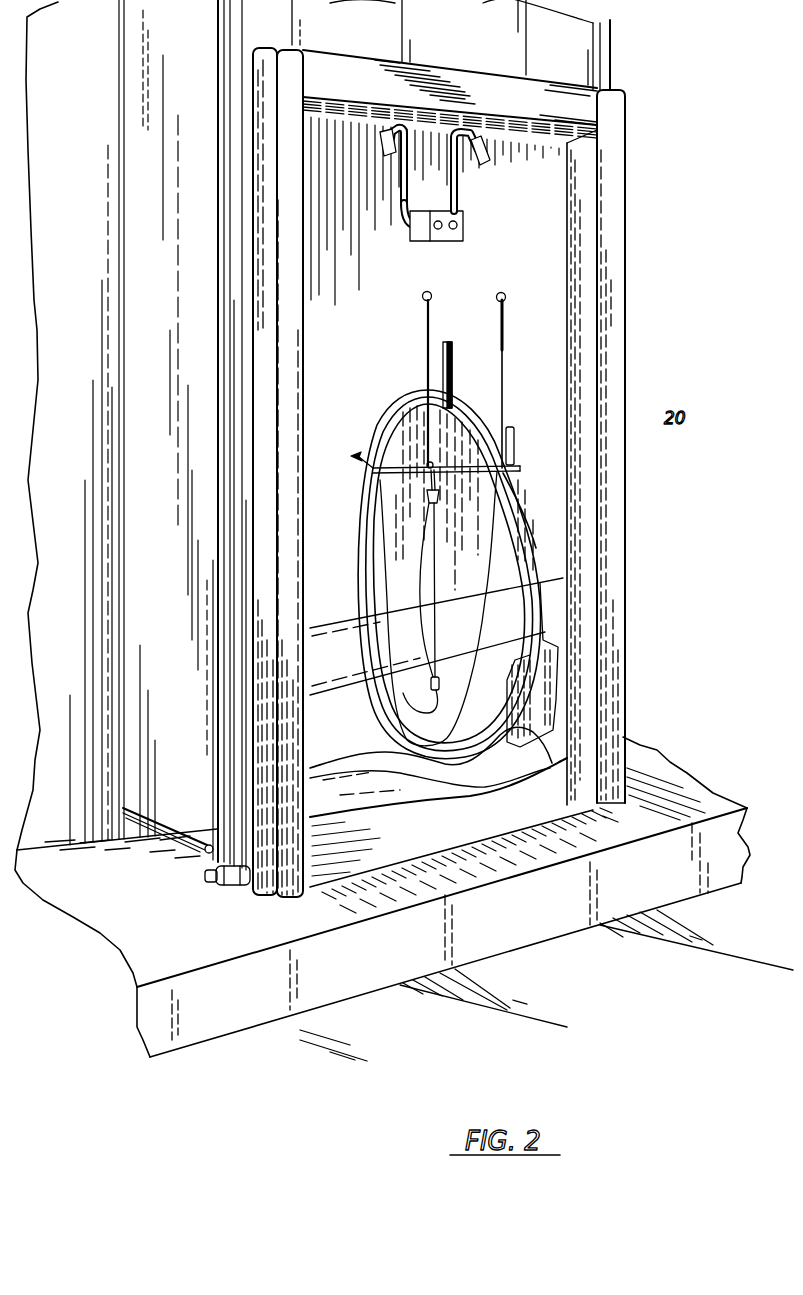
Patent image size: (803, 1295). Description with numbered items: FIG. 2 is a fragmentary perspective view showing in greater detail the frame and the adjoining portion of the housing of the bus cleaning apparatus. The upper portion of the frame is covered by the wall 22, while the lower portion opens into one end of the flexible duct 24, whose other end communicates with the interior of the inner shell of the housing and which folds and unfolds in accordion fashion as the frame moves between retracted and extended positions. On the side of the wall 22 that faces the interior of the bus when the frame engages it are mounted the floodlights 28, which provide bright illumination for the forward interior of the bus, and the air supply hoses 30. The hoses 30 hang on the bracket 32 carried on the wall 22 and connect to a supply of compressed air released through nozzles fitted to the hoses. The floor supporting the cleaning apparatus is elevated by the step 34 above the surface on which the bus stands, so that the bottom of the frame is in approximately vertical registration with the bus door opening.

The wall 22 is at (545, 243).
The flexible duct 24 is at (327, 798).
The floodlights 28 is at (400, 150).
The air supply hoses 30 is at (385, 420).
The bracket 32 is at (452, 357).
The step 34 is at (343, 962).